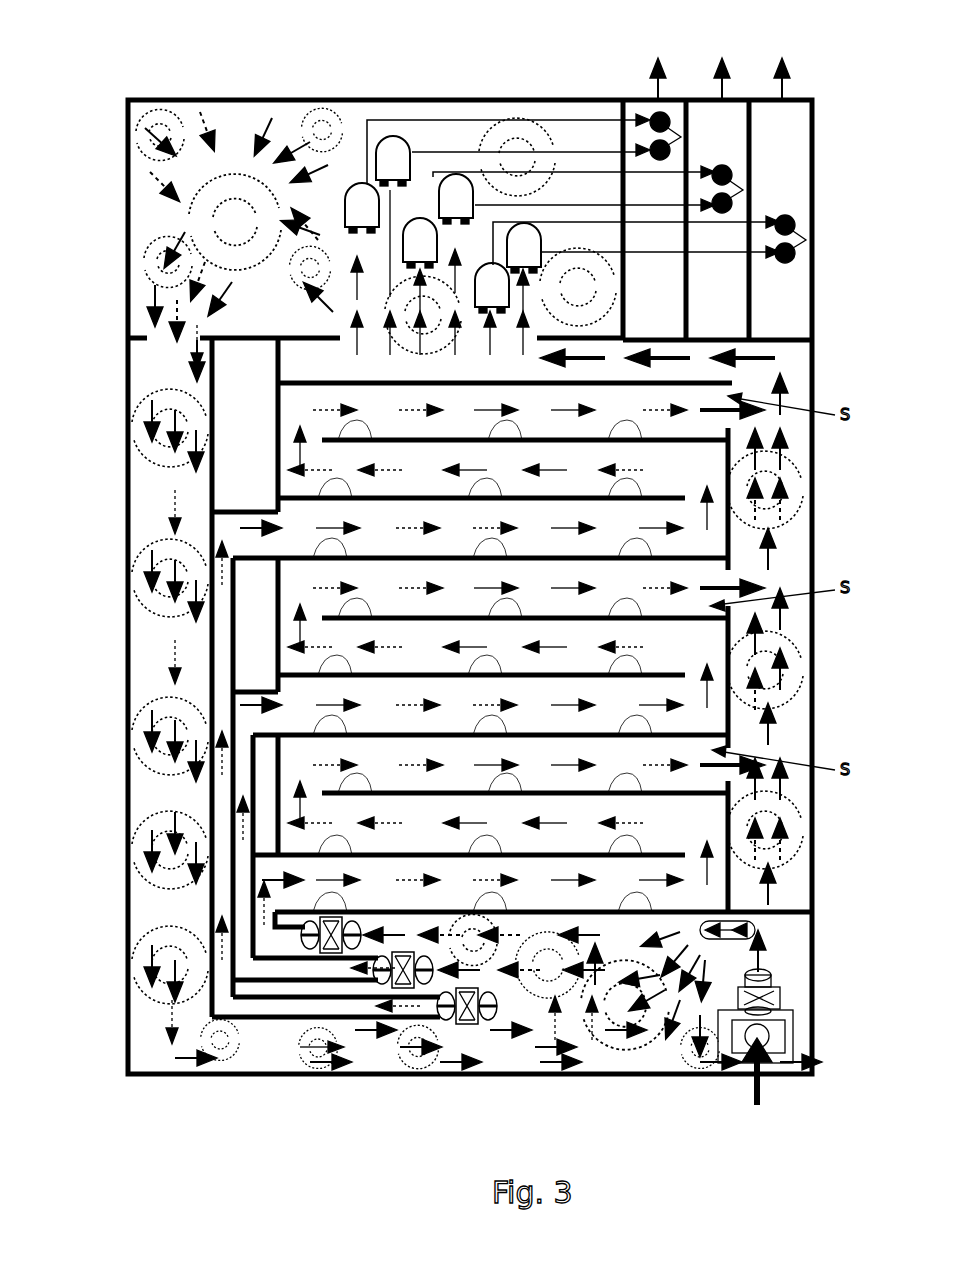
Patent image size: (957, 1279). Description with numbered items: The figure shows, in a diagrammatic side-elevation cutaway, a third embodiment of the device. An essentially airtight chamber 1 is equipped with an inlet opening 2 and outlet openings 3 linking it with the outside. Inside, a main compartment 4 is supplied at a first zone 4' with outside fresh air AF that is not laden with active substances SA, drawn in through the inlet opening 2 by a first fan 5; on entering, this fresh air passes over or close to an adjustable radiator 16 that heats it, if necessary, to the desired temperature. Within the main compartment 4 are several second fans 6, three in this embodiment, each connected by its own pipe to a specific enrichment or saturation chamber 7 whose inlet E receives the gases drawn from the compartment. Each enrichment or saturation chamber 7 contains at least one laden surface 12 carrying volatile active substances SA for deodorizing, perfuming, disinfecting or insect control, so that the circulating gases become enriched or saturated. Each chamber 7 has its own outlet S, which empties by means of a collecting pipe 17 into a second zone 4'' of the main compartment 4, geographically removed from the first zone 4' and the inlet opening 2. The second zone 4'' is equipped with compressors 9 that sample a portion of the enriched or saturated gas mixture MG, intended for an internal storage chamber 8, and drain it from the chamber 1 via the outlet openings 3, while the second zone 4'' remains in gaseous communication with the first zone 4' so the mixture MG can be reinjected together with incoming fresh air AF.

The chamber 1 is at (297, 98).
The inlet opening 2 is at (770, 1040).
The outlet opening 3 is at (681, 137).
The main compartment 4 is at (239, 245).
The first zone 4' is at (480, 1018).
The second zone 4'' is at (483, 236).
The first fan 5 is at (785, 1000).
The second fan 6 is at (331, 953).
The enrichment or saturation chamber 7 is at (278, 840).
The internal storage chamber 8 is at (778, 332).
The compressor 9 is at (492, 286).
The laden surface 12 is at (278, 785).
The adjustable radiator 16 is at (760, 930).
The collecting pipe 17 is at (622, 380).